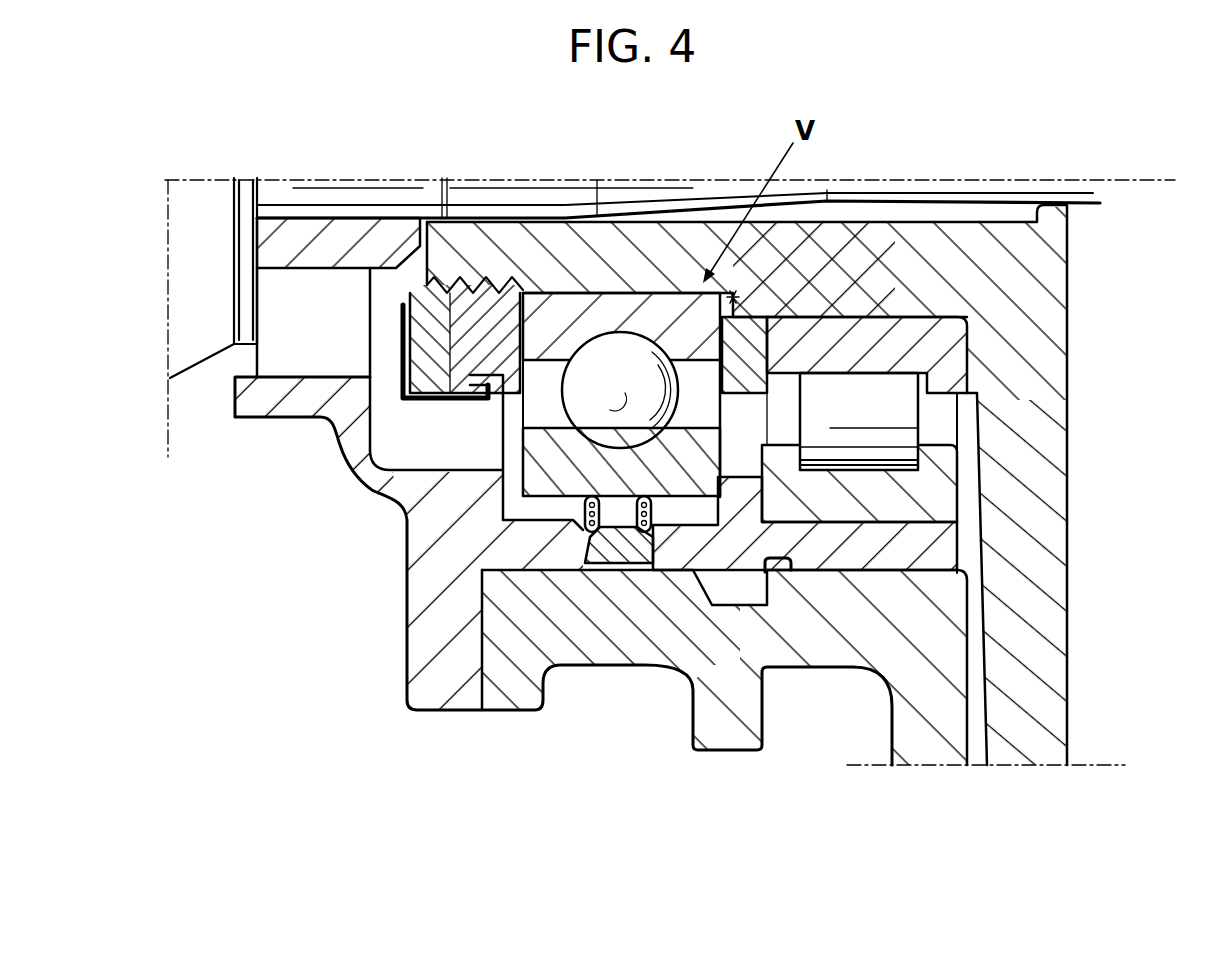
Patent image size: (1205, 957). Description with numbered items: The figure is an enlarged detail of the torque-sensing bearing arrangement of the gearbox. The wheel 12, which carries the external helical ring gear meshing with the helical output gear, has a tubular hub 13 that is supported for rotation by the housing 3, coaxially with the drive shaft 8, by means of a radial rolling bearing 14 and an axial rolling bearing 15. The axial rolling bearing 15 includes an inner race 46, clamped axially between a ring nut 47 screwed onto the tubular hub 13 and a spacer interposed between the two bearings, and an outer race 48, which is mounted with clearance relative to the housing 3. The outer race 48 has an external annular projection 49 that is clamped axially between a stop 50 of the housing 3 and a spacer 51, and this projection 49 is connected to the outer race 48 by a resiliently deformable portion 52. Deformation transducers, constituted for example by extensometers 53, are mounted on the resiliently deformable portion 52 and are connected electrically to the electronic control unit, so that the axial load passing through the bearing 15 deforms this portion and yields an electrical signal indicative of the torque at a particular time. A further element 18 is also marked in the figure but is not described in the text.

The housing 3 is at (652, 650).
The drive shaft 8 is at (1000, 193).
The wheel 12 is at (1053, 613).
The tubular hub 13 is at (933, 252).
The radial rolling bearing 14 is at (950, 348).
The axial rolling bearing 15 is at (737, 293).
The spacer ring 18 is at (752, 330).
The inner race 46 is at (623, 312).
The ring nut 47 is at (491, 290).
The outer race 48 is at (537, 462).
The external annular projection 49 is at (577, 543).
The stop 50 is at (527, 550).
The spacer 51 is at (688, 553).
The resiliently deformable portion 52 is at (620, 517).
The extensometers 53 is at (585, 510).